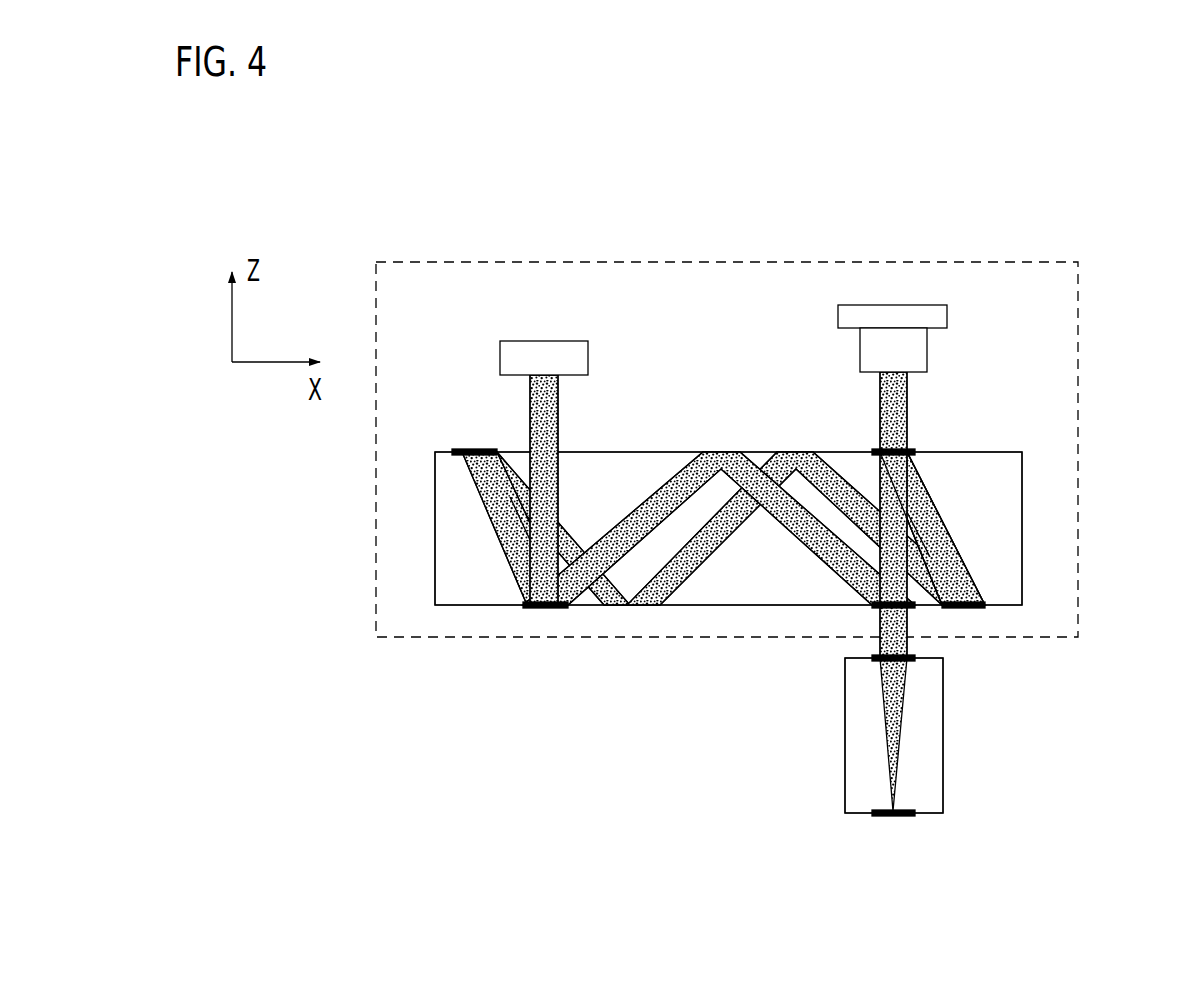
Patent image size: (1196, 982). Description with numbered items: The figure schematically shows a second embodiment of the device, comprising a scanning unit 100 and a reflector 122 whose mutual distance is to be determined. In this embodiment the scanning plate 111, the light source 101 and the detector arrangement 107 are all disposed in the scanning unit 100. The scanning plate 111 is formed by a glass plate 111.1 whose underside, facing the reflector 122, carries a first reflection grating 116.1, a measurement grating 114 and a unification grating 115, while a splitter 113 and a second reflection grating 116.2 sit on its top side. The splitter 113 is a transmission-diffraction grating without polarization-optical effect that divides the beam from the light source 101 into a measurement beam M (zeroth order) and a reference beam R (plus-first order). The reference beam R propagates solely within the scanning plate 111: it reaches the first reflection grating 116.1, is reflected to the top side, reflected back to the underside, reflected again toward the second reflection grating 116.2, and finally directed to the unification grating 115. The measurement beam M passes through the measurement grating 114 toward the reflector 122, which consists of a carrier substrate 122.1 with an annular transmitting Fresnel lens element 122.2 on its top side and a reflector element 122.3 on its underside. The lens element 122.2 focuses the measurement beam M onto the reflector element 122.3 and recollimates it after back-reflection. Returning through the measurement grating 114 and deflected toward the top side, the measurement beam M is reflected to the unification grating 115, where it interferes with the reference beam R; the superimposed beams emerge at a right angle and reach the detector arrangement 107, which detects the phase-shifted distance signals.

The scanning unit 100 is at (562, 262).
The light source 101 is at (938, 318).
The detector arrangement 107 is at (580, 350).
The scanning plate 111 is at (412, 482).
The glass plate 111.1 is at (457, 549).
The splitter 113 is at (906, 447).
The measurement grating 114 is at (872, 607).
The unification grating 115 is at (527, 607).
The first reflection grating 116.1 is at (980, 607).
The second reflection grating 116.2 is at (457, 449).
The reflector 122 is at (825, 795).
The carrier substrate 122.1 is at (927, 750).
The lens element 122.2 is at (870, 658).
The reflector element 122.3 is at (905, 815).
The measurement beam M is at (877, 495).
The reference beam R is at (950, 555).